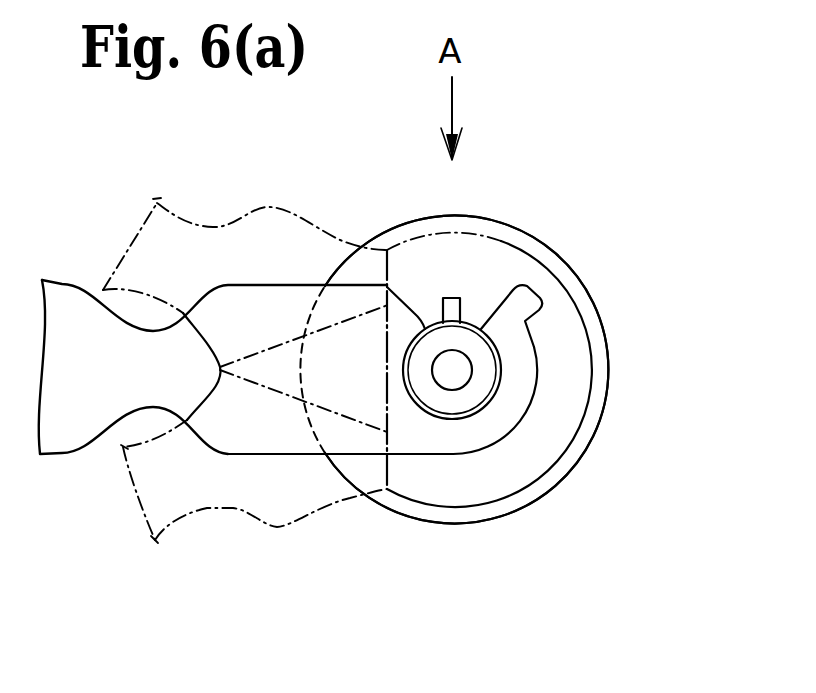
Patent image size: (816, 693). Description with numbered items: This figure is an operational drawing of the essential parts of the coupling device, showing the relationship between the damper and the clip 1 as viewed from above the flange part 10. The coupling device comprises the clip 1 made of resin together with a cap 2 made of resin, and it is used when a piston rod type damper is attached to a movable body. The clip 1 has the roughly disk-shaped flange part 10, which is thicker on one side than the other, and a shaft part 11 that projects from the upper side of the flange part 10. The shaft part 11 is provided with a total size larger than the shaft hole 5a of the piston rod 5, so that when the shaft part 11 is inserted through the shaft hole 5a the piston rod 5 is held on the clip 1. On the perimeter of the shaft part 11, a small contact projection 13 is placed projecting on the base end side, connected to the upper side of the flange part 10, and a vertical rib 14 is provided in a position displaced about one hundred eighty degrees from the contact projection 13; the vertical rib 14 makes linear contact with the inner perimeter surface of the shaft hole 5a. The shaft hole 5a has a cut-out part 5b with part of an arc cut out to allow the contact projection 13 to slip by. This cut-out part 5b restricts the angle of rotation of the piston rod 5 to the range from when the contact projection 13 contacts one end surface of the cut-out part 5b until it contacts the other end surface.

The clip 1 is at (551, 489).
The cap 2 is at (440, 490).
The piston rod 5 is at (223, 245).
The shaft hole 5a is at (500, 378).
The cut-out part 5b is at (514, 298).
The flange part 10 is at (567, 267).
The shaft part 11 is at (465, 342).
The contact projection 13 is at (447, 297).
The vertical rib 14 is at (452, 420).